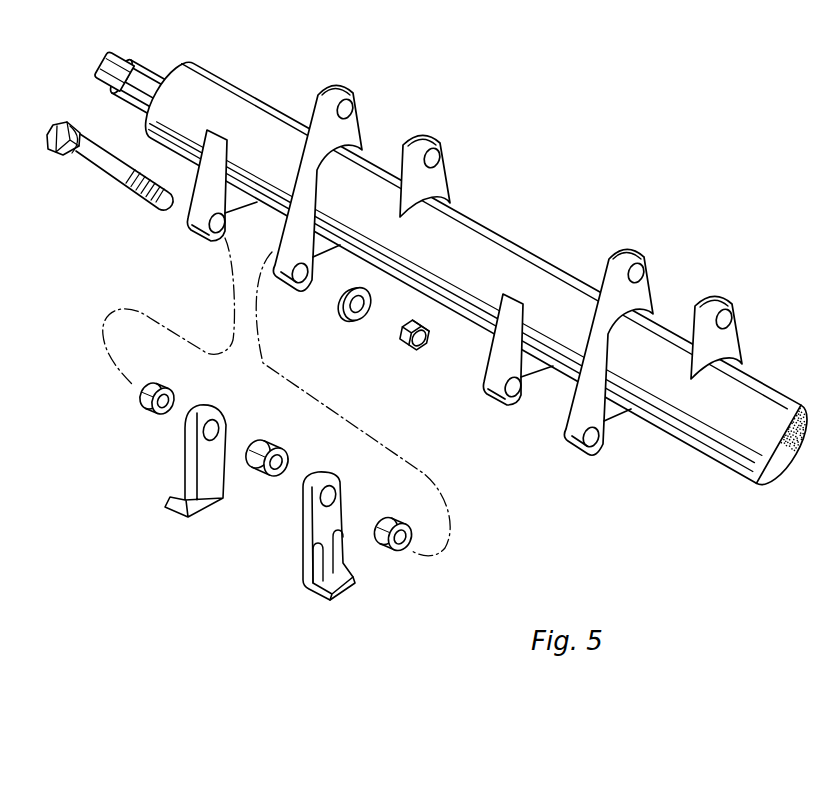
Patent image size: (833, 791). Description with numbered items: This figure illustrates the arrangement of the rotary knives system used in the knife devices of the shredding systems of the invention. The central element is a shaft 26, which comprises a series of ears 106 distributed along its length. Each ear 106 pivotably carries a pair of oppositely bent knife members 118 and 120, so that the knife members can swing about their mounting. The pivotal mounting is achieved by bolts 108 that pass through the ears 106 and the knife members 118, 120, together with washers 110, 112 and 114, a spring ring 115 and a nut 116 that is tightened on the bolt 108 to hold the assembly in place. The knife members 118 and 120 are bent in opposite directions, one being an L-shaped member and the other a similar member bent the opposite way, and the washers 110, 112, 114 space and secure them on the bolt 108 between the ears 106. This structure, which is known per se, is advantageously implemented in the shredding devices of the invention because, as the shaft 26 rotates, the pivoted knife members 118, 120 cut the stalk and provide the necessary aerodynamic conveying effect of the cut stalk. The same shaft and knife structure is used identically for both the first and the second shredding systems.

The shaft 26 is at (546, 237).
The ears 106 is at (335, 88).
The bolts 108 is at (102, 182).
The washer 110 is at (191, 374).
The washer 112 is at (272, 448).
The washer 114 is at (402, 518).
The spring ring 115 is at (351, 330).
The nut 116 is at (408, 355).
The knife member 118 is at (215, 412).
The knife member 120 is at (332, 474).